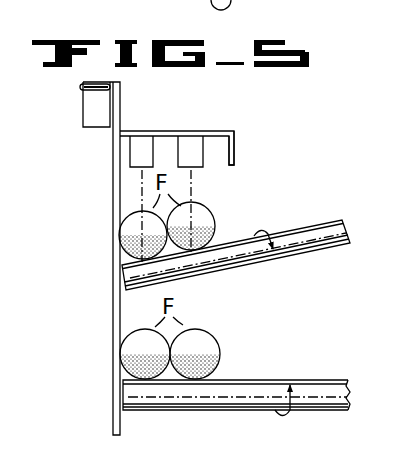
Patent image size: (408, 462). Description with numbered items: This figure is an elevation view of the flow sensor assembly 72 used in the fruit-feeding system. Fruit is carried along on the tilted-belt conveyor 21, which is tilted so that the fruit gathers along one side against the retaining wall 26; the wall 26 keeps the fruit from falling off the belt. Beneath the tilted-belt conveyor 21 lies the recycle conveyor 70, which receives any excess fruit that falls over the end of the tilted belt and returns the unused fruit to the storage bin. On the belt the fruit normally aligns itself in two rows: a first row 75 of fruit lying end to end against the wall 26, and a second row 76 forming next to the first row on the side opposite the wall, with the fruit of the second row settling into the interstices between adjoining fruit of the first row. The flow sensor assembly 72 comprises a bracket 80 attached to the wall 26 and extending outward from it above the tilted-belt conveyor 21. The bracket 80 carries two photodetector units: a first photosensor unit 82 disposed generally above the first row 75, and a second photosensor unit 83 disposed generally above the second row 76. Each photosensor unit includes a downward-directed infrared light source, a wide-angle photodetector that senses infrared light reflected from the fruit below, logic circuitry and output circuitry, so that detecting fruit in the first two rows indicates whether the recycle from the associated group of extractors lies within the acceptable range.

The tilted-belt discharge conveyor 21 is at (245, 268).
The retaining wall 26 is at (113, 310).
The recycle conveyor 70 is at (190, 410).
The flow sensor assembly 72 is at (170, 129).
The first row 75 is at (138, 233).
The second row 76 is at (186, 227).
The bracket 80 is at (230, 131).
The first photosensor unit 82 is at (140, 156).
The second photosensor unit 83 is at (203, 165).